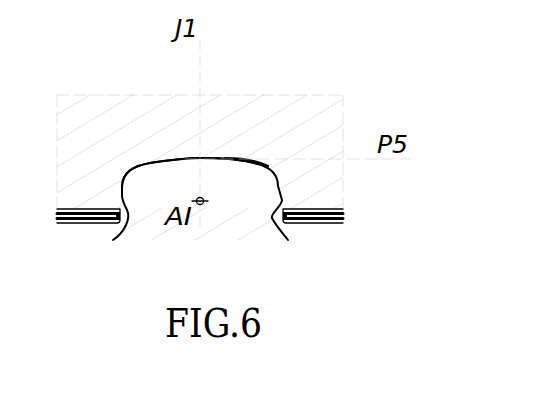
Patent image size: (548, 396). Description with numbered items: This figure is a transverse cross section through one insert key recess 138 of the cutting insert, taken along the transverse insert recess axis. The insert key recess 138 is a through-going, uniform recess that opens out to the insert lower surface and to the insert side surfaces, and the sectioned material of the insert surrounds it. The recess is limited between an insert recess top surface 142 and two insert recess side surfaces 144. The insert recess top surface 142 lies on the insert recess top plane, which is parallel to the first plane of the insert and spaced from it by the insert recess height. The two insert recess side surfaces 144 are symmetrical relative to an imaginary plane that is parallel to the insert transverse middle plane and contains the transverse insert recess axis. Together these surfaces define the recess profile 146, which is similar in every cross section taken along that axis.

The insert key recess 138 is at (140, 226).
The insert recess top surface 142 is at (231, 161).
The insert recess side surfaces 144 is at (113, 240).
The recess profile 146 is at (243, 187).